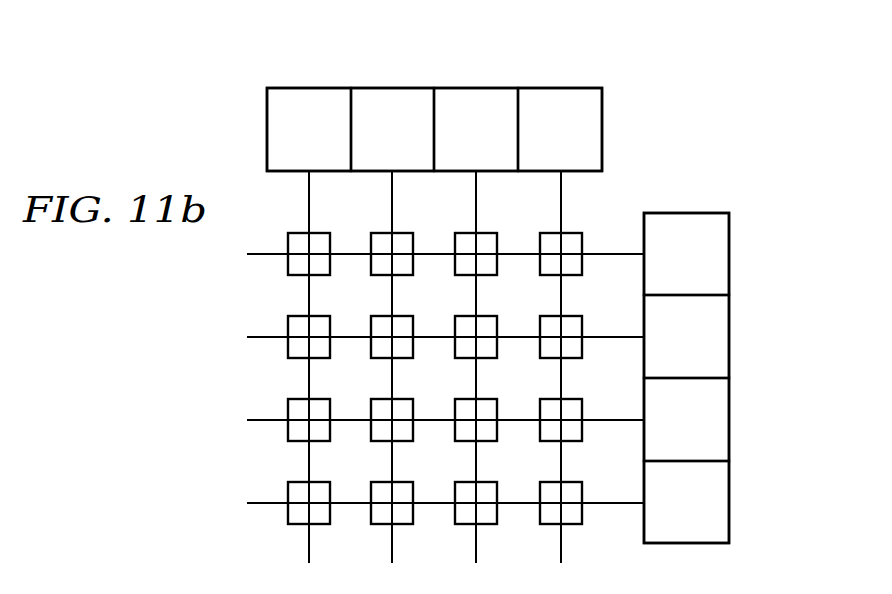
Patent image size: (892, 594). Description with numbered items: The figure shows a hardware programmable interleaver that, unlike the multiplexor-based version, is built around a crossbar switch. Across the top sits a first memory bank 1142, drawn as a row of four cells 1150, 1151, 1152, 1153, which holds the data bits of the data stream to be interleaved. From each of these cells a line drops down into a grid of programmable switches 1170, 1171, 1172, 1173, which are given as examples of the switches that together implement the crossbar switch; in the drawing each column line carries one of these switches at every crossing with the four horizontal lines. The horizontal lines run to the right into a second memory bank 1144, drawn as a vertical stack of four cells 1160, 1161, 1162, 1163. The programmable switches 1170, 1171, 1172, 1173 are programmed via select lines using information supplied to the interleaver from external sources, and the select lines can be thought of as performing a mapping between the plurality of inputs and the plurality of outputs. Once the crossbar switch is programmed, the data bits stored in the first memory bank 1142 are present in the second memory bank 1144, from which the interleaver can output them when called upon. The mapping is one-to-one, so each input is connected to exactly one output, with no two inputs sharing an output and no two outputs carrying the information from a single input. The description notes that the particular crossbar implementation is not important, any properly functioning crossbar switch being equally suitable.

The first memory bank 1142 is at (603, 130).
The second memory bank 1144 is at (688, 212).
The column driver cell 1150 is at (308, 93).
The column driver cell 1151 is at (392, 93).
The column driver cell 1152 is at (477, 93).
The column driver cell 1153 is at (560, 93).
The row driver cell 1160 is at (722, 255).
The row driver cell 1161 is at (722, 338).
The row driver cell 1162 is at (722, 420).
The row driver cell 1163 is at (722, 503).
The programmable switch 1170 is at (300, 232).
The programmable switch 1171 is at (383, 232).
The programmable switch 1172 is at (484, 232).
The programmable switch 1173 is at (569, 232).